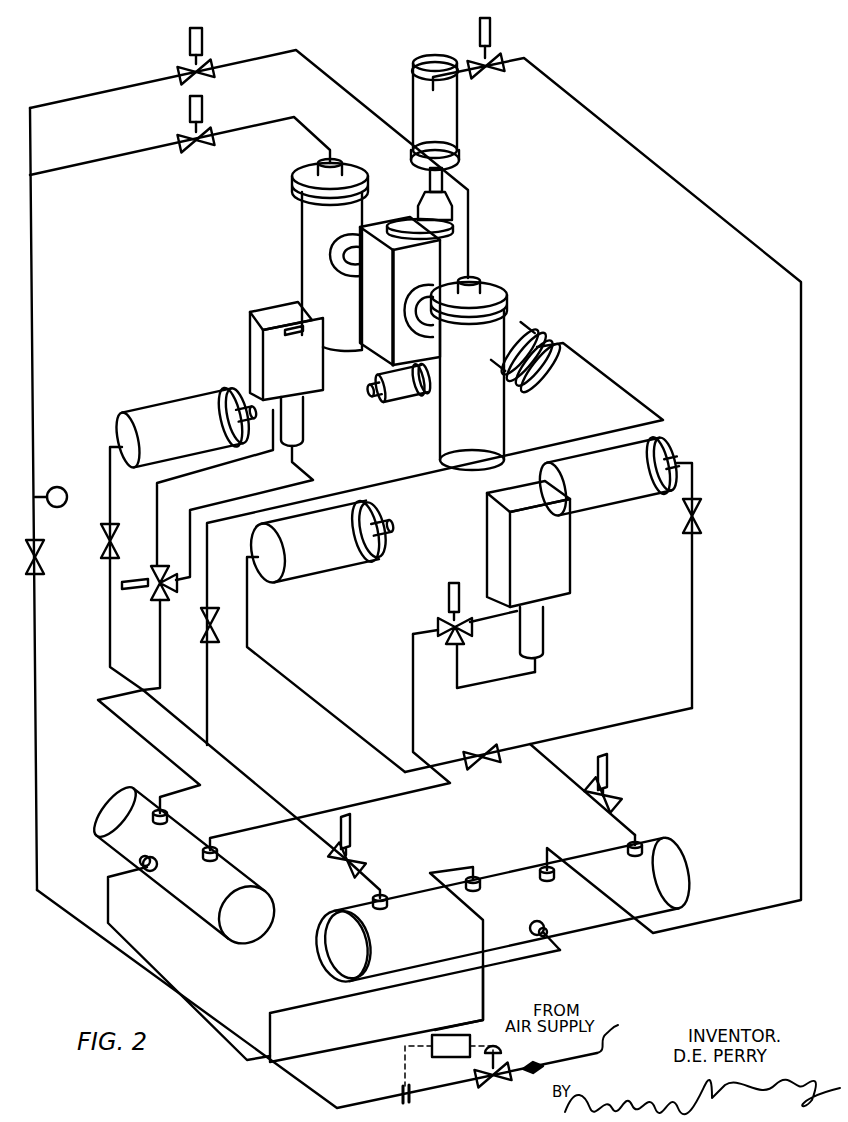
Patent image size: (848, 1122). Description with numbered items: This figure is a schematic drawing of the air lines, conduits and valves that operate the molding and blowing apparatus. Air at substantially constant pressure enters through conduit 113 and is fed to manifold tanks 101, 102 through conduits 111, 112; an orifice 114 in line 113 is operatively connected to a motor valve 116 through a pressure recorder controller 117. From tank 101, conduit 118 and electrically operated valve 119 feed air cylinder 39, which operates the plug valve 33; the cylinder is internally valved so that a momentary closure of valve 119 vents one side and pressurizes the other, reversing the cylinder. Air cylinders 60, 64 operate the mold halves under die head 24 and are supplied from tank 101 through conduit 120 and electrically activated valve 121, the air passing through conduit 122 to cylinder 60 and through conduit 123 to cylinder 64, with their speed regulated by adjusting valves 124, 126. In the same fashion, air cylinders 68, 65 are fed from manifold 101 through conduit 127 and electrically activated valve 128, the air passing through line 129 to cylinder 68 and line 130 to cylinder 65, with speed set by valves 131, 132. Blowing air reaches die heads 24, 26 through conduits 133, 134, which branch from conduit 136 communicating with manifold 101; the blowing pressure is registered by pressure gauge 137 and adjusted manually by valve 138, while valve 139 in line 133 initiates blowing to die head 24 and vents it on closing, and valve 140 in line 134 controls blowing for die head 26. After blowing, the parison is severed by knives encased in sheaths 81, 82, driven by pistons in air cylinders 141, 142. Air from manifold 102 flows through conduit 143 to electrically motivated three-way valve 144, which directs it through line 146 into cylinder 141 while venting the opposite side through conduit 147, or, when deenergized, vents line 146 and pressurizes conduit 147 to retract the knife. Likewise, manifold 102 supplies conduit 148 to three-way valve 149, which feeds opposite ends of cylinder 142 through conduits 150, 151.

The die head 24 is at (503, 405).
The die head 26 is at (302, 237).
The plug valve 33 is at (376, 222).
The air cylinder 39 is at (452, 117).
The air cylinder 60 is at (328, 555).
The air cylinder 64 is at (610, 505).
The air cylinder 65 is at (522, 333).
The air cylinder 68 is at (190, 400).
The sheath 81 is at (493, 533).
The sheath 82 is at (250, 331).
The manifold tank 101 is at (508, 875).
The manifold tank 102 is at (262, 896).
The conduit 111 is at (133, 943).
The conduit 112 is at (400, 990).
The conduit 113 is at (333, 1107).
The orifice 114 is at (411, 1093).
The motor valve 116 is at (495, 1080).
The pressure recorder controller 117 is at (455, 1057).
The conduit 118 is at (610, 121).
The electrically operated valve 119 is at (490, 28).
The conduit 120 is at (640, 843).
The valve 121 is at (615, 790).
The conduit 122 is at (515, 752).
The conduit 123 is at (695, 630).
The valve 124 is at (472, 750).
The valve 126 is at (698, 514).
The conduit 127 is at (380, 892).
The valve 128 is at (352, 838).
The line 129 is at (108, 487).
The line 130 is at (661, 421).
The valve 131 is at (100, 540).
The valve 132 is at (205, 645).
The conduit 133 is at (378, 118).
The conduit 134 is at (293, 120).
The conduit 136 is at (35, 320).
The pressure gauge 137 is at (57, 487).
The valve 138 is at (40, 560).
The valve 139 is at (205, 40).
The valve 140 is at (203, 108).
The air cylinder 141 is at (545, 632).
The air cylinder 142 is at (303, 412).
The conduit 143 is at (245, 830).
The three-way valve 144 is at (450, 615).
The line 146 is at (538, 670).
The conduit 147 is at (510, 612).
The conduit 148 is at (160, 762).
The three-way valve 149 is at (167, 578).
The conduit 150 is at (306, 470).
The conduit 151 is at (155, 482).